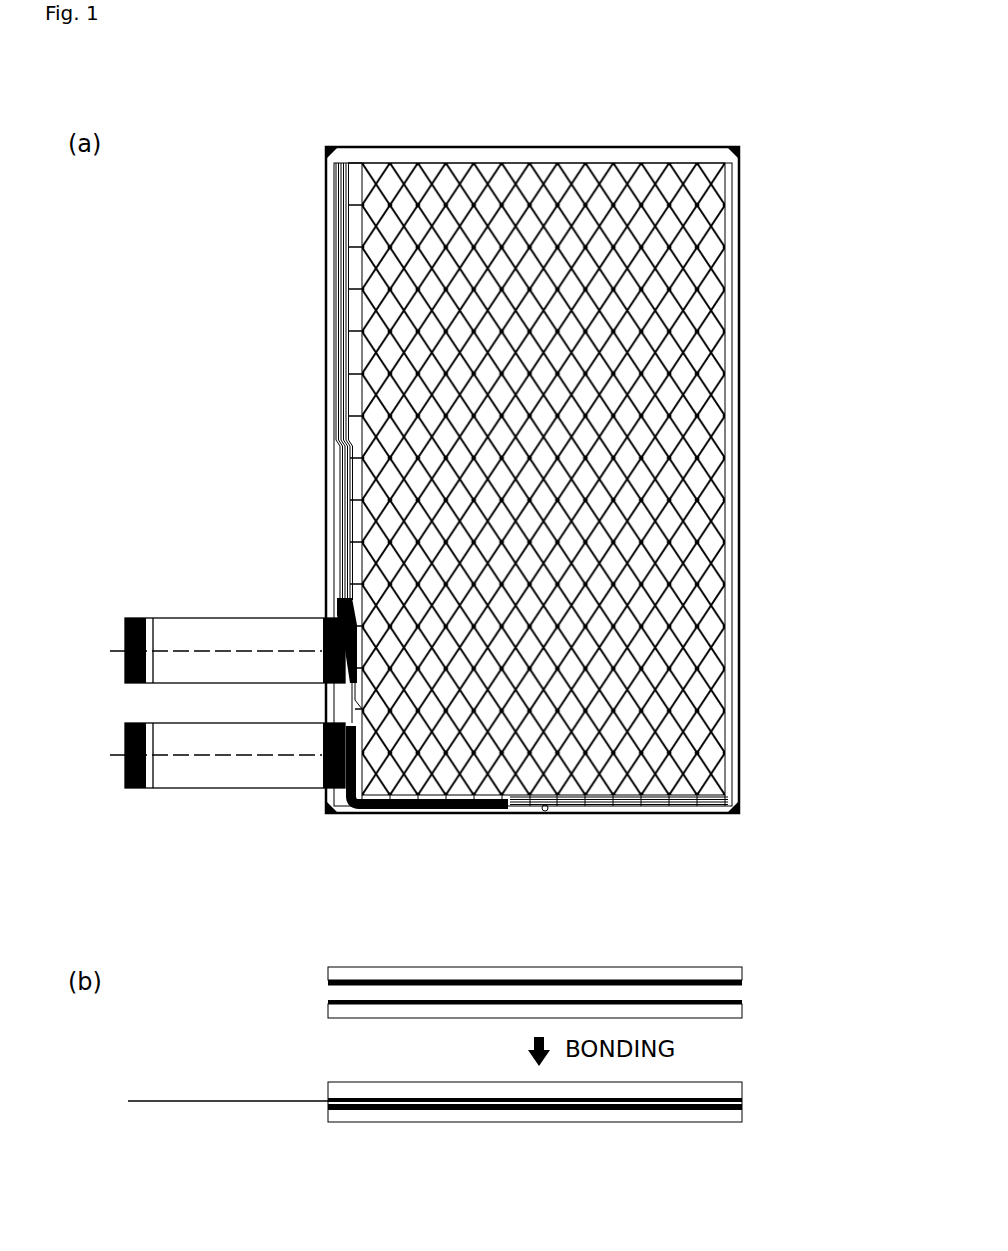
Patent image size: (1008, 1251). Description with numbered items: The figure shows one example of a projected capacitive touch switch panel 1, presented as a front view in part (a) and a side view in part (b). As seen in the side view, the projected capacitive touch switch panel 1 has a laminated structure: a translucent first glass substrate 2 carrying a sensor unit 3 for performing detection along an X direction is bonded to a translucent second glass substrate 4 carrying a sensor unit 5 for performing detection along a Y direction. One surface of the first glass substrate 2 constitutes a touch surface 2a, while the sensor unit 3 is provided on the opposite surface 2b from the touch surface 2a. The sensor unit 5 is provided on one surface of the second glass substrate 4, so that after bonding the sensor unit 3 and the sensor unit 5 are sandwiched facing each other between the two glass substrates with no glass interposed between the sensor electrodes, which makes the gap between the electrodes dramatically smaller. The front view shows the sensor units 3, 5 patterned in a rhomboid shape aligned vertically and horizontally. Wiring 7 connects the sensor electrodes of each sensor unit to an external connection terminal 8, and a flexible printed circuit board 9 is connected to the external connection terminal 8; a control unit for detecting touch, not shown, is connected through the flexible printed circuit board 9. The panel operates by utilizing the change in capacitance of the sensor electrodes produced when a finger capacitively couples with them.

The projected capacitive touch switch panel 1 is at (758, 150).
The first glass substrate 2 is at (714, 972).
The touch surface 2a is at (708, 328).
The opposite surface 2b is at (328, 988).
The sensor unit 3 is at (475, 178).
The second glass substrate 4 is at (722, 1014).
The sensor unit 5 is at (460, 203).
The wiring 7 is at (337, 325).
The external connection terminal 8 is at (330, 618).
The flexible printed circuit board 9 is at (223, 635).